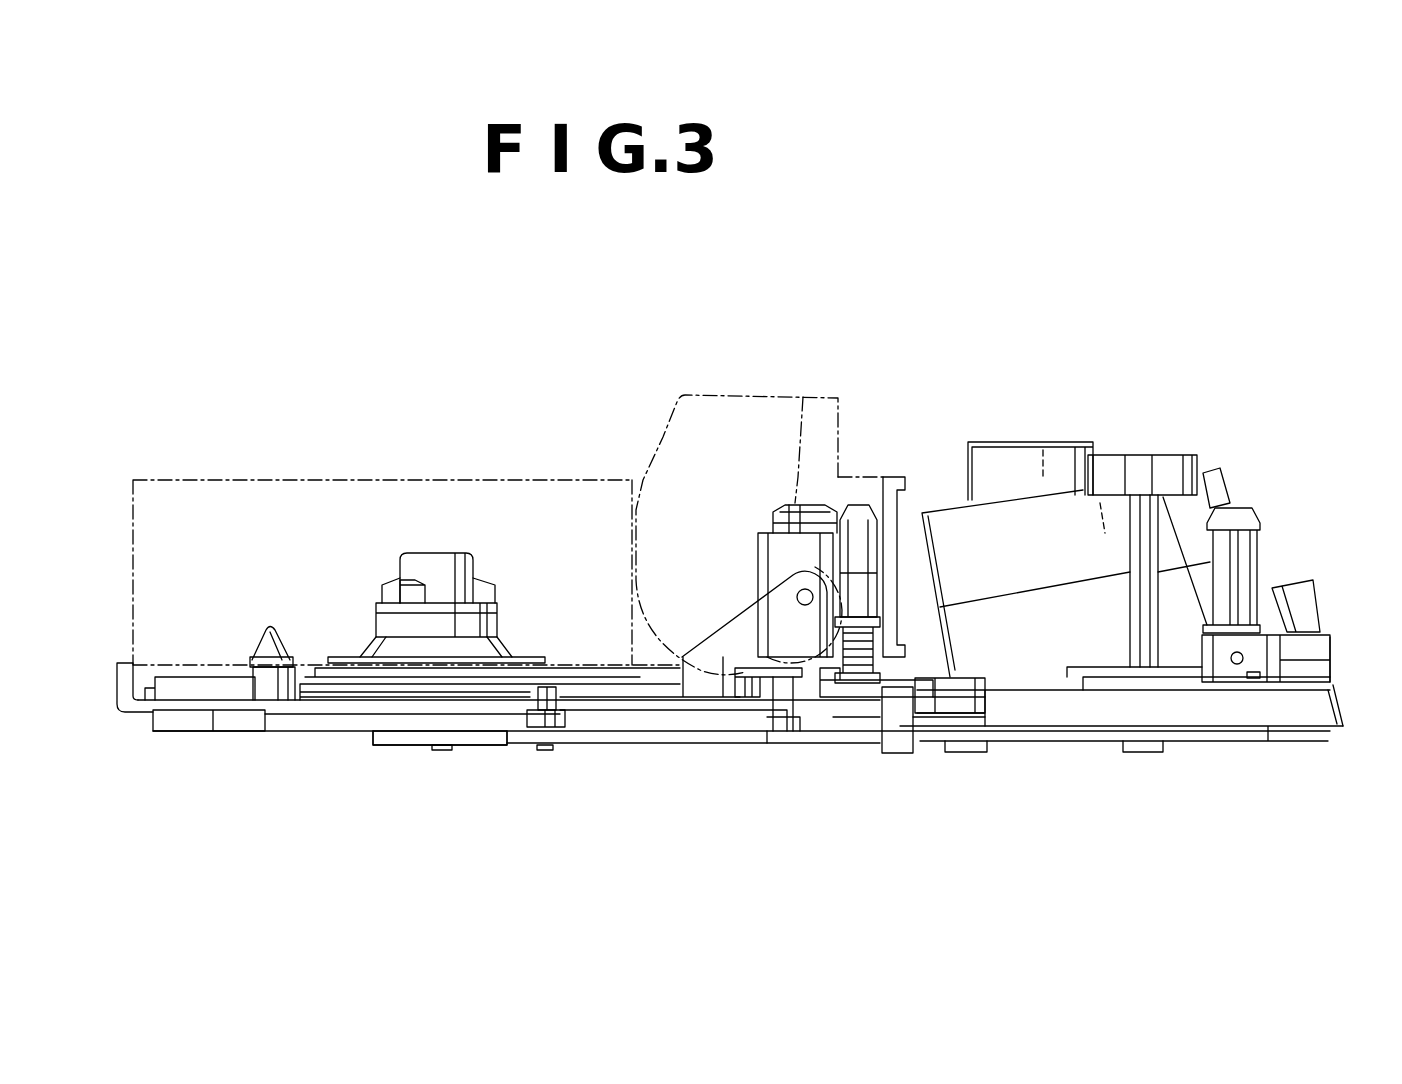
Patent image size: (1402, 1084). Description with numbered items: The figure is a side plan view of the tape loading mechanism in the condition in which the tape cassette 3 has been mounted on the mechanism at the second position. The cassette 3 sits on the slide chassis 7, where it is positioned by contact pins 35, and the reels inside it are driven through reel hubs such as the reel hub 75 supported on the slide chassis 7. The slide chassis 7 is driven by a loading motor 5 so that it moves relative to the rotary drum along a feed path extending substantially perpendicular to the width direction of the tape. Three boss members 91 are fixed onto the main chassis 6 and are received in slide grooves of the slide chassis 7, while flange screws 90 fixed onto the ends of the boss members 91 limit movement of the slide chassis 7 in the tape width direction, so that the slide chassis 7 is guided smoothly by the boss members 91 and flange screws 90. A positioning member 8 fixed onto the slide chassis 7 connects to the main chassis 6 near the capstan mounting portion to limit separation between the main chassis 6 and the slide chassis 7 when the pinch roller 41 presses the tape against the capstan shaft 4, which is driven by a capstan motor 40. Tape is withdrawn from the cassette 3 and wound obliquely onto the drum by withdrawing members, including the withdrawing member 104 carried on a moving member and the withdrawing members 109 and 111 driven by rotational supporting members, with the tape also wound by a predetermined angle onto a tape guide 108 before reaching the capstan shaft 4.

The cassette 3 is at (505, 492).
The capstan shaft 4 is at (1140, 507).
The loading motor 5 is at (1013, 467).
The main chassis 6 is at (427, 740).
The slide chassis 7 is at (143, 707).
The positioning member 8 is at (898, 745).
The contact pins 35 is at (282, 633).
The capstan motor 40 is at (1115, 677).
The pinch roller 41 is at (763, 560).
The reel hub 75 is at (445, 555).
The flange screws 90 is at (548, 732).
The boss members 91 is at (540, 718).
The withdrawing member 104 is at (817, 517).
The tape guide 108 is at (1238, 548).
The withdrawing member 109 is at (790, 520).
The withdrawing member 111 is at (877, 540).